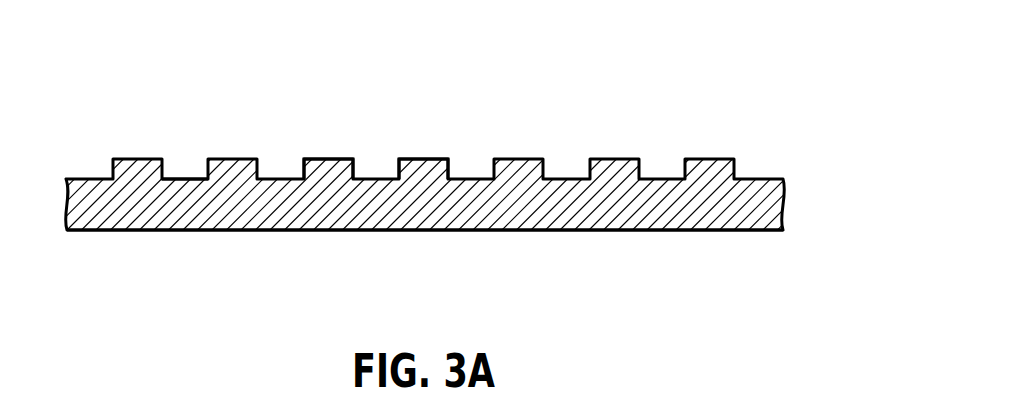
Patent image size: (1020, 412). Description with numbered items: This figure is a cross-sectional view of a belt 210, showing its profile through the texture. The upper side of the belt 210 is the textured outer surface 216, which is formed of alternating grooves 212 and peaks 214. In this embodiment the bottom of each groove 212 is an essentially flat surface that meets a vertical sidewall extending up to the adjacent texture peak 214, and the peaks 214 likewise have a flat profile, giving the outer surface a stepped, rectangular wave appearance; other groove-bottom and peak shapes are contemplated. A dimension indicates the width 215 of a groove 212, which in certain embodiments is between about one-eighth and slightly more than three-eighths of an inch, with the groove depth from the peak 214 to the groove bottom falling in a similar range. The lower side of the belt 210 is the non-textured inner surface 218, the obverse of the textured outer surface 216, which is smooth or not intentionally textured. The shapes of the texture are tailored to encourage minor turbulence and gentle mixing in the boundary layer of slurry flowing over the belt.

The belt 210 is at (460, 30).
The grooves 212 is at (185, 178).
The peaks 214 is at (330, 158).
The textured outer surface 216 is at (448, 131).
The width 215 is at (740, 130).
The non-textured inner surface 218 is at (328, 232).